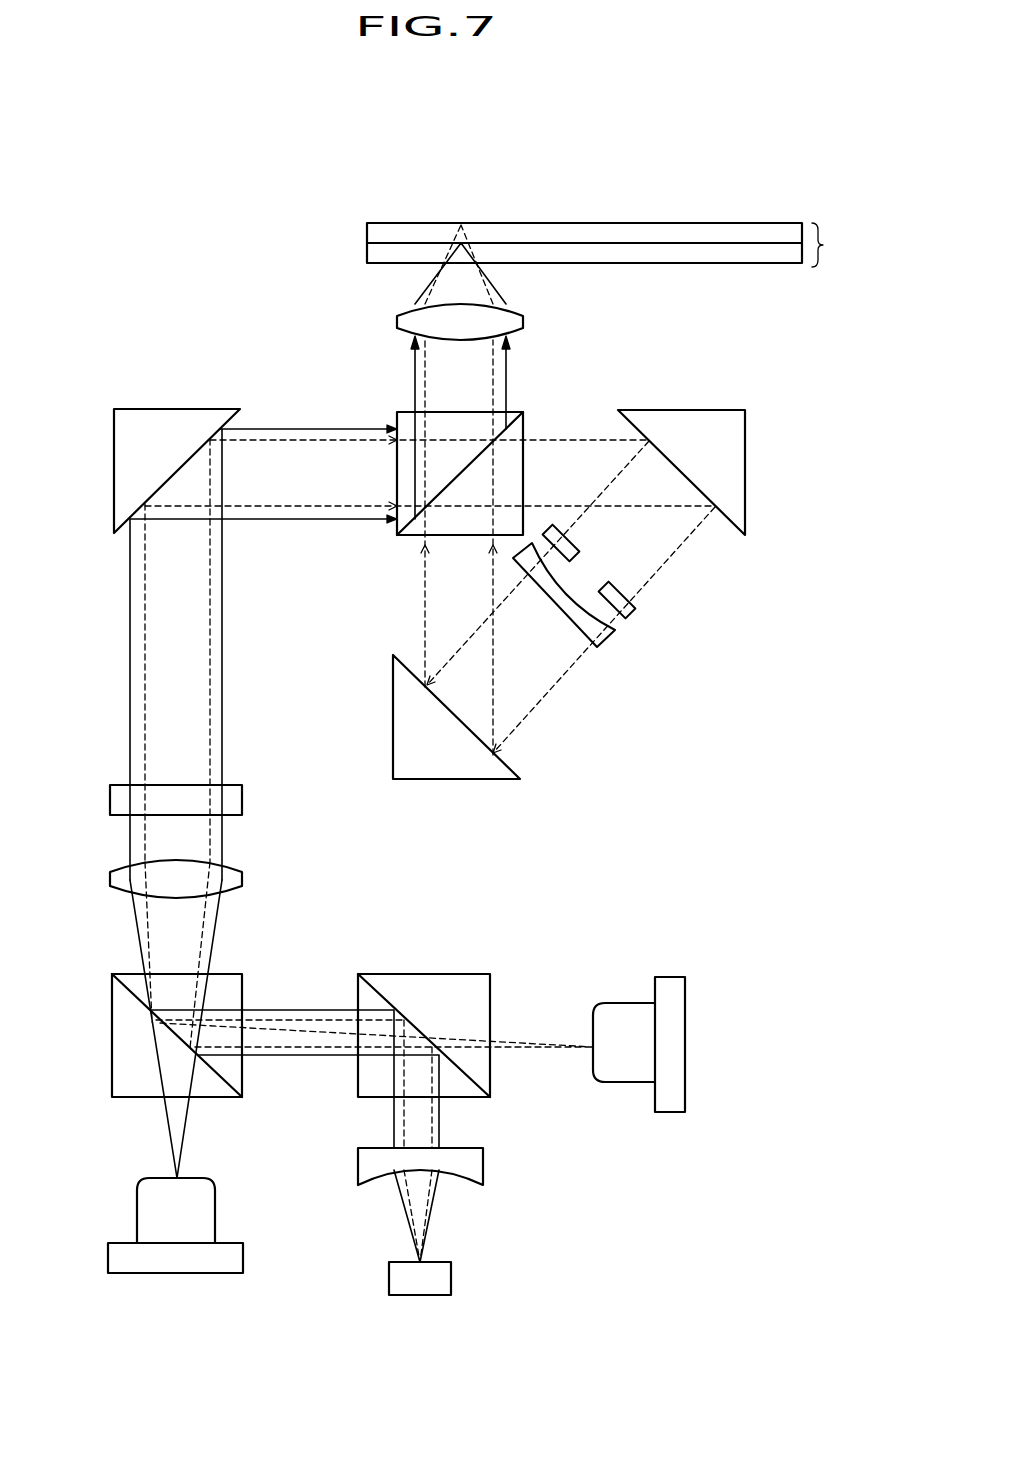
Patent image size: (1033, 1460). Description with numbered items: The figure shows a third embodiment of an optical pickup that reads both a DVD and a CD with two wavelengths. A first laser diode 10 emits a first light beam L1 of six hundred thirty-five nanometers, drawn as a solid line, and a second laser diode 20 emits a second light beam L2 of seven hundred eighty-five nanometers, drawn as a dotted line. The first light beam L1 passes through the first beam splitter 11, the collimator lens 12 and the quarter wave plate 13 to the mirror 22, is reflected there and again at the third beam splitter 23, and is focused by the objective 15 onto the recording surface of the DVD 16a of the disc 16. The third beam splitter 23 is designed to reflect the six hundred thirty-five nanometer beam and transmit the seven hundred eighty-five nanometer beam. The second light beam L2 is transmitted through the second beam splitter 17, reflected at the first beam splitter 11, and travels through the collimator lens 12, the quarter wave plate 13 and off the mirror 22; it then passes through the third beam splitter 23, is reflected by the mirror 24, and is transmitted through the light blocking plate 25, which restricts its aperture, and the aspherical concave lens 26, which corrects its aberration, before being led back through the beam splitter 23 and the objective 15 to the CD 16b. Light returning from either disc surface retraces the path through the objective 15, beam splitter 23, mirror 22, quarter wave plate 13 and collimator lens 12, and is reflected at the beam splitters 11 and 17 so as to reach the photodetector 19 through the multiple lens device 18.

The first laser diode 10 is at (235, 1257).
The first beam splitter 11 is at (240, 972).
The collimator lens 12 is at (243, 876).
The quarter wave plate 13 is at (243, 796).
The objective 15 is at (523, 322).
The optical disc 16 is at (710, 203).
The DVD 16a is at (367, 256).
The CD 16b is at (848, 245).
The second beam splitter 17 is at (478, 972).
The multiple lens device 18 is at (483, 1163).
The photodetector 19 is at (452, 1280).
The second laser diode 20 is at (673, 976).
The mirror 22 is at (188, 413).
The third beam splitter 23 is at (520, 412).
The mirror 24 is at (682, 413).
The light blocking plate 25 is at (633, 618).
The aspherical concave lens 26 is at (607, 645).
The first light beam L1 is at (163, 1122).
The second light beam L2 is at (548, 1052).